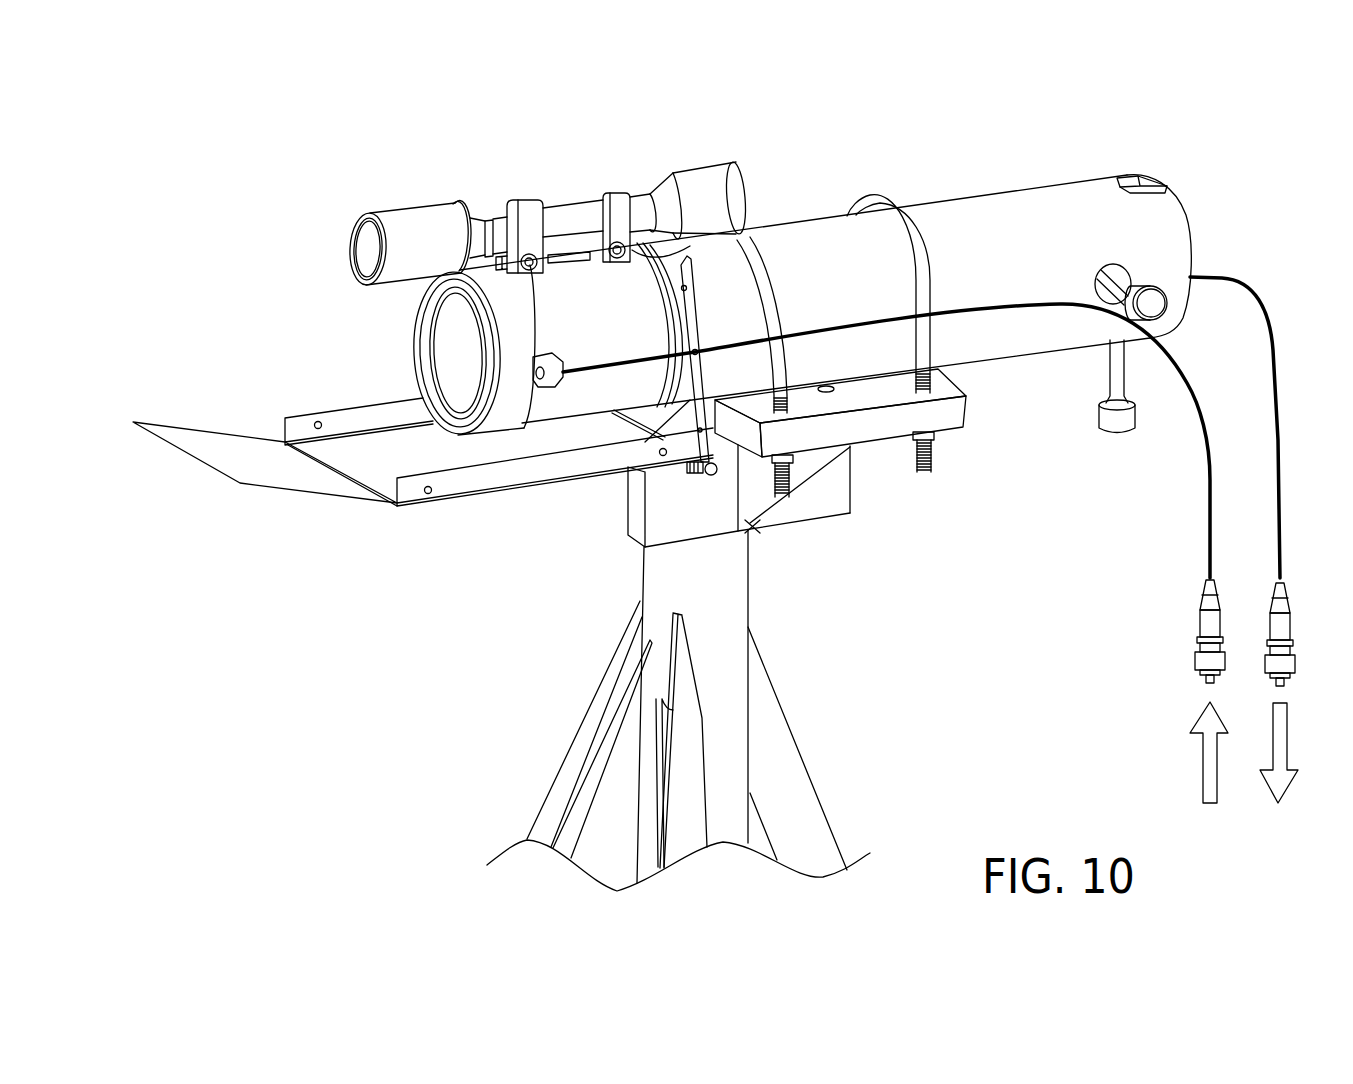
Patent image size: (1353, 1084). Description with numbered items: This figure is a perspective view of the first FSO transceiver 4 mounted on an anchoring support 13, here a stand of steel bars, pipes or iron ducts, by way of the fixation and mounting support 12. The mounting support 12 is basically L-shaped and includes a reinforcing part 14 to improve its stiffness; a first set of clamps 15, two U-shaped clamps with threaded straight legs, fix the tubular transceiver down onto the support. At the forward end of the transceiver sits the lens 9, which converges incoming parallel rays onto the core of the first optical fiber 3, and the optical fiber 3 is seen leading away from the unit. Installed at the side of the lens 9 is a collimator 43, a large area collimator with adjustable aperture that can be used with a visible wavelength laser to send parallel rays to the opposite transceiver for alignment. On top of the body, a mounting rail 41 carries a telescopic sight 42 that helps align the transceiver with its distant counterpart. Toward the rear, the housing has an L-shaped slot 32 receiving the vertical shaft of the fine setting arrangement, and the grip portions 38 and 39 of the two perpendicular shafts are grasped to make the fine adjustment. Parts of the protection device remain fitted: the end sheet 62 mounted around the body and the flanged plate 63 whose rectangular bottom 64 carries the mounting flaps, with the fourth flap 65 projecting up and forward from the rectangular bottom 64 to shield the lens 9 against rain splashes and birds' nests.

The optical fiber 3 is at (1277, 458).
The FSO transceiver 4 is at (1032, 378).
The lens 9 is at (463, 357).
The fixation and mounting support 12 is at (880, 424).
The anchoring support 13 is at (713, 573).
The reinforcing part 14 is at (803, 464).
The first set of clamps 15 is at (763, 253).
The L-shaped slot 32 is at (1142, 178).
The grip portion 38 is at (1117, 420).
The grip portion 39 is at (1157, 300).
The mounting rail 41 is at (557, 250).
The telescopic sight 42 is at (412, 238).
The collimator 43 is at (540, 390).
The end sheet 62 is at (670, 400).
The flanged plate 63 is at (500, 484).
The rectangular bottom 64 is at (387, 461).
The fourth flap 65 is at (233, 457).